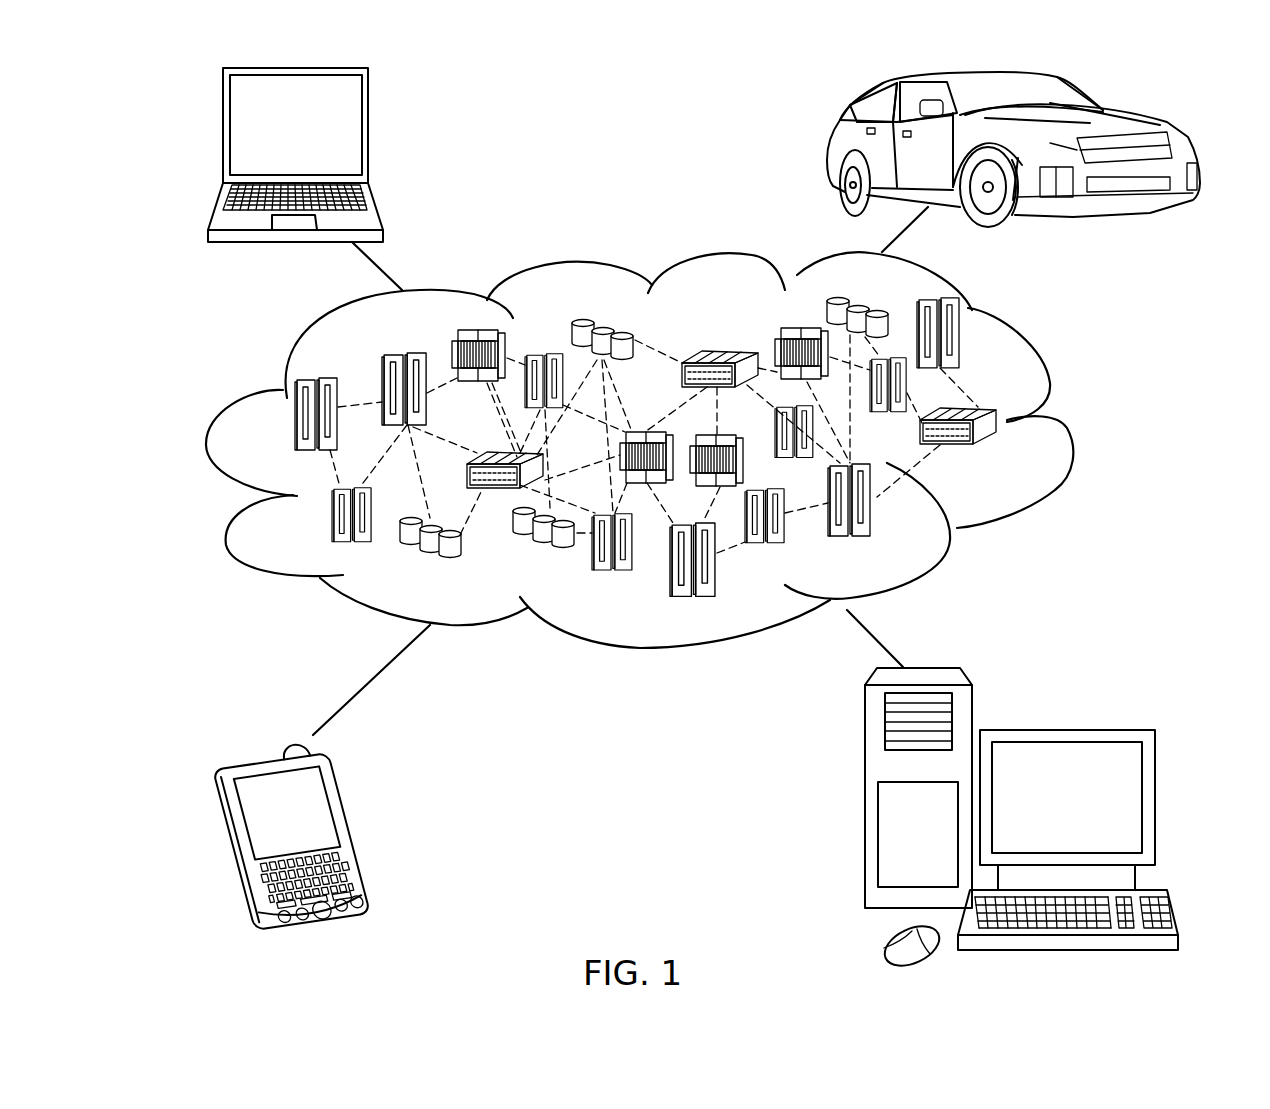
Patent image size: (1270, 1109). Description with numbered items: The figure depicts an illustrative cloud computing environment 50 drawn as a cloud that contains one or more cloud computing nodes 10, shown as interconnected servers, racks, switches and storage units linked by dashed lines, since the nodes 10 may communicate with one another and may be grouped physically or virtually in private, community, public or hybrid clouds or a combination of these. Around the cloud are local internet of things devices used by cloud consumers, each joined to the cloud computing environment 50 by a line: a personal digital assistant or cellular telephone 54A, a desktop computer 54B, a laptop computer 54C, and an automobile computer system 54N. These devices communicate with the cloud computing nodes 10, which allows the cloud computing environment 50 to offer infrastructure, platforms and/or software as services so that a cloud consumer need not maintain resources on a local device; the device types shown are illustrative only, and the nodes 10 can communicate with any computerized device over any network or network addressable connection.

The cloud computing environment 50 is at (1067, 423).
The cloud computing nodes 10 is at (1007, 457).
The personal digital assistant (PDA) or cellular telephone 54A is at (357, 827).
The desktop computer 54B is at (1063, 730).
The laptop computer 54C is at (368, 133).
The automobile computer system 54N is at (832, 150).